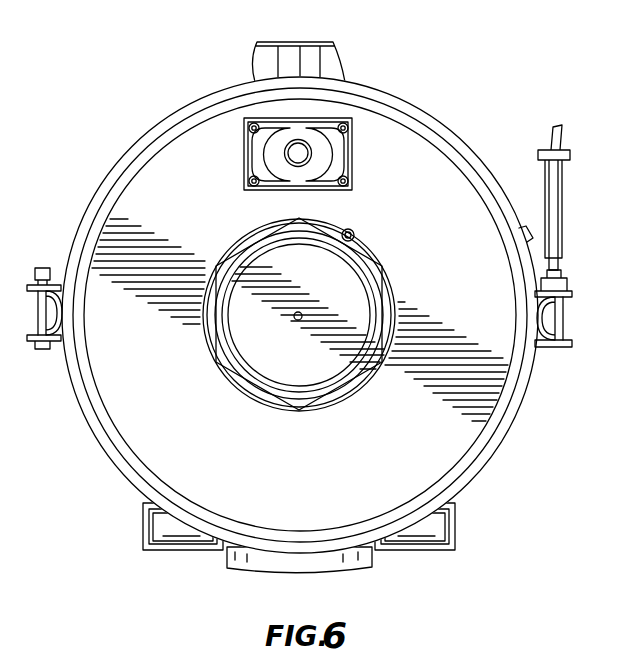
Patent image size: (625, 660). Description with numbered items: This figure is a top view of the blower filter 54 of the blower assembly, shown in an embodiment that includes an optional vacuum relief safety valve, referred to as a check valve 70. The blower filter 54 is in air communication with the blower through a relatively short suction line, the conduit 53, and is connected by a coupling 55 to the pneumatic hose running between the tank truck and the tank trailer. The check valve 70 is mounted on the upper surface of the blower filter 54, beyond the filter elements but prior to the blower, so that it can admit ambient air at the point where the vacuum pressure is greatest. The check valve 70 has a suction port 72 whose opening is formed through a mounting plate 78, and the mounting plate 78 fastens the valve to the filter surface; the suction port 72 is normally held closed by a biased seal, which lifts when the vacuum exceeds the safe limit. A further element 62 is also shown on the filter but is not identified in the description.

The conduit 53 is at (325, 562).
The blower filter 54 is at (133, 424).
The coupling 55 is at (347, 380).
The cap 62 is at (266, 59).
The check valve 70 is at (312, 153).
The suction port 72 is at (289, 157).
The mounting plate 78 is at (244, 175).